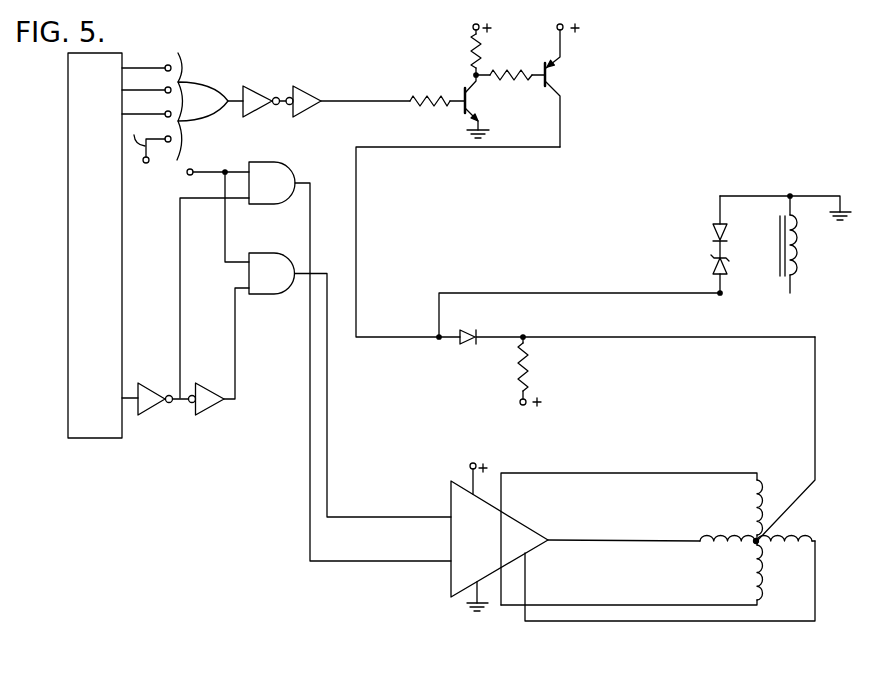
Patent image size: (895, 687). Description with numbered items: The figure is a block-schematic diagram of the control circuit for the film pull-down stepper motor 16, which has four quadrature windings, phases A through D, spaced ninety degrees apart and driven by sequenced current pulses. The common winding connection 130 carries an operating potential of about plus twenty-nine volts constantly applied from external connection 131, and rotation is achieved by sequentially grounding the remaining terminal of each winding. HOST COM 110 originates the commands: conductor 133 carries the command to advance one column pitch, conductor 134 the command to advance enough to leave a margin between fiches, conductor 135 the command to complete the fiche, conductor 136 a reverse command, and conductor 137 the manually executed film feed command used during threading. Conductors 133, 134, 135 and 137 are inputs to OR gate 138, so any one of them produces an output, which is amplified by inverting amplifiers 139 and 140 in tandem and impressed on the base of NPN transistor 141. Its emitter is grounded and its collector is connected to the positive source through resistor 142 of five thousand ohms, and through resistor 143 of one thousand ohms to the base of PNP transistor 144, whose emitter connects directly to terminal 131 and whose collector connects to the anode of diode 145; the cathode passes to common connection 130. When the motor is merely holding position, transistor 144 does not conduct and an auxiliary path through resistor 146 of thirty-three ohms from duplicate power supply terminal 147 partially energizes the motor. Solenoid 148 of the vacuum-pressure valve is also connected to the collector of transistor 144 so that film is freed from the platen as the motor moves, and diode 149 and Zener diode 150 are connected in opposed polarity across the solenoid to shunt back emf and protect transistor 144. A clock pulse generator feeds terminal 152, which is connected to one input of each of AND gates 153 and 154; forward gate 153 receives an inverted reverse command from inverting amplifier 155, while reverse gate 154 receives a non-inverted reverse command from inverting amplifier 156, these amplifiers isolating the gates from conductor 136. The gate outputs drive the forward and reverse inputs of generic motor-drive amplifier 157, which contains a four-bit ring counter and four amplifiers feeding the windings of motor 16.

The stepper motor 16 is at (779, 528).
The HOST COM 110 is at (95, 245).
The common winding connection 130 is at (815, 452).
The external connection 131 is at (554, 28).
The conductor 133 is at (135, 68).
The conductor 134 is at (135, 90).
The conductor 135 is at (135, 114).
The conductor 136 is at (130, 402).
The conductor 137 is at (152, 140).
The OR gate 138 is at (207, 81).
The inverting amplifier 139 is at (253, 90).
The inverting amplifier 140 is at (303, 90).
The NPN transistor 141 is at (479, 97).
The resistor 142 is at (473, 40).
The resistor 143 is at (510, 65).
The PNP transistor 144 is at (562, 73).
The diode 145 is at (466, 330).
The resistor 146 is at (541, 368).
The power supply terminal 147 is at (520, 402).
The solenoid 148 is at (793, 252).
The diode 149 is at (728, 233).
The Zener diode 150 is at (728, 270).
The terminal 152 is at (193, 171).
The forward AND gate 153 is at (291, 167).
The reverse AND gate 154 is at (271, 257).
The inverting amplifier 155 is at (150, 388).
The inverting amplifier 156 is at (206, 388).
The generic motor-drive amplifier 157 is at (519, 521).